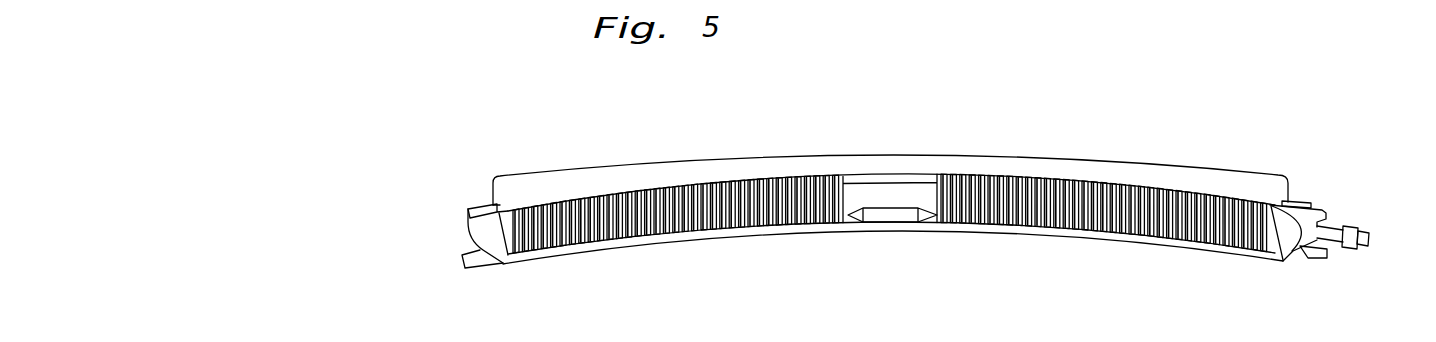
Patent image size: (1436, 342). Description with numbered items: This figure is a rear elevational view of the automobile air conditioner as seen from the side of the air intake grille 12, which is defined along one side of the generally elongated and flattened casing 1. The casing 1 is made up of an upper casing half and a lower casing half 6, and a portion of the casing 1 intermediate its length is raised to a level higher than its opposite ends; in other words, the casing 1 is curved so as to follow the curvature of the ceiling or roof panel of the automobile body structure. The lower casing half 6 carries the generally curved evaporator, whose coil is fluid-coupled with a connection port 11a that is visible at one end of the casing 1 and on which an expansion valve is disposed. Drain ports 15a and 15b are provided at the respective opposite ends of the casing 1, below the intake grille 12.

The casing 1 is at (1172, 177).
The lower casing half 6 is at (1048, 237).
The connection port 11a is at (1358, 229).
The air intake grille 12 is at (693, 224).
The drain port 15a is at (1310, 257).
The drain port 15b is at (472, 268).